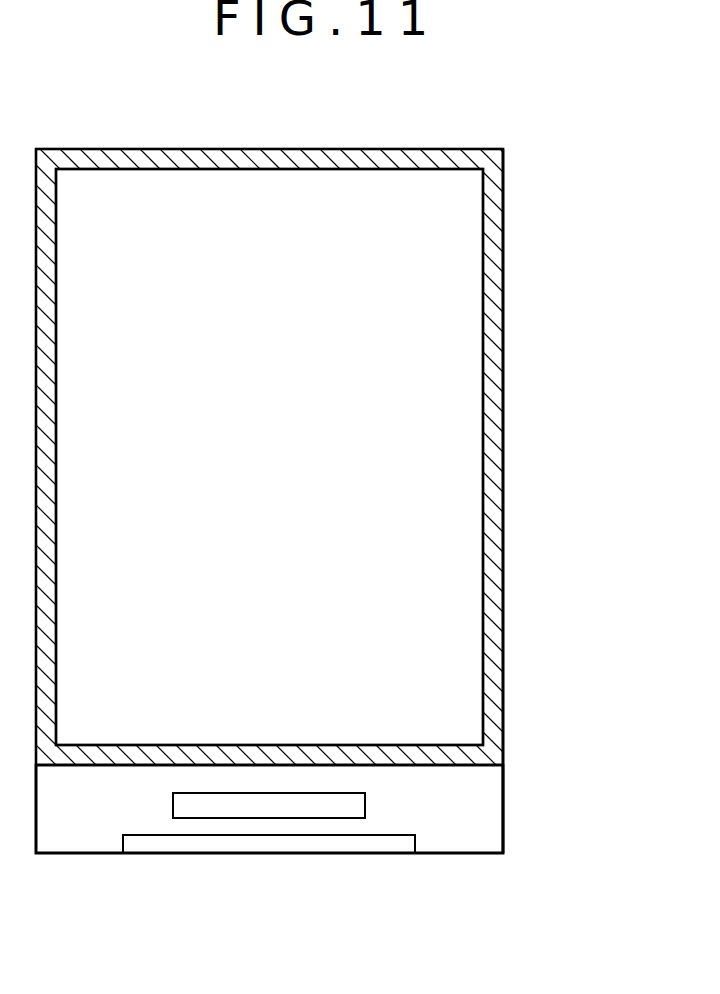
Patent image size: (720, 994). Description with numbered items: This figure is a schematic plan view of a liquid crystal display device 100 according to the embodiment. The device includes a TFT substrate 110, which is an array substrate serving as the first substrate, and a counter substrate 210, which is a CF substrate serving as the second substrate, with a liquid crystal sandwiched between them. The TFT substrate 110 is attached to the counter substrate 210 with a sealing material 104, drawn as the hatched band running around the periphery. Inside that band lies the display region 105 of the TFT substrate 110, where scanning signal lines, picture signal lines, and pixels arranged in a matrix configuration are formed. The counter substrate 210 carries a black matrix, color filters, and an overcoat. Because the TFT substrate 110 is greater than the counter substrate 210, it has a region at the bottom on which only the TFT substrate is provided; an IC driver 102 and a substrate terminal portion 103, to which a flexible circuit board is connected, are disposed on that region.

The liquid crystal display device 100 is at (100, 113).
The IC driver 102 is at (310, 810).
The substrate terminal portion 103 is at (215, 845).
The sealing material 104 is at (491, 450).
The display region 105 is at (423, 315).
The TFT substrate 110 is at (503, 826).
The counter substrate 210 is at (503, 558).